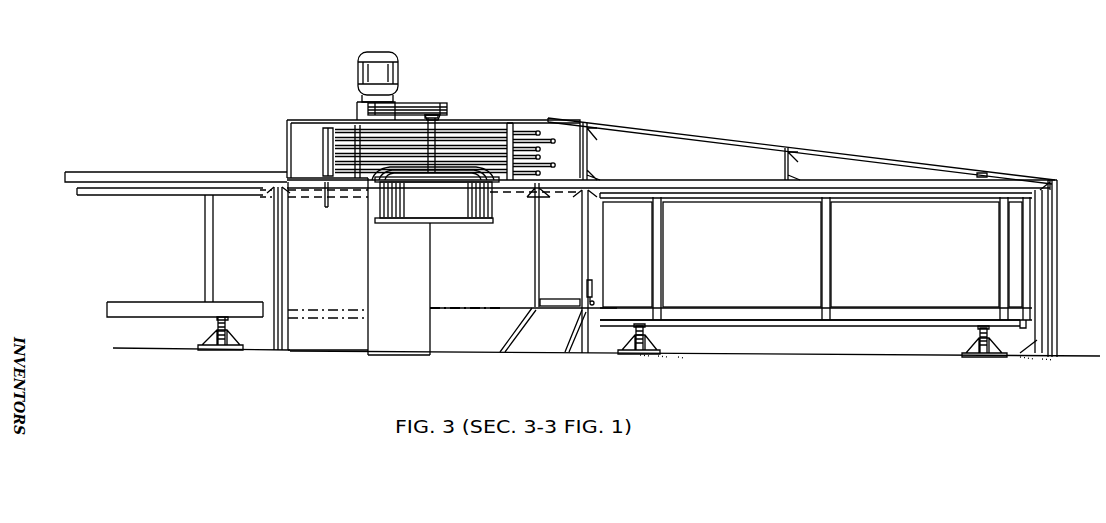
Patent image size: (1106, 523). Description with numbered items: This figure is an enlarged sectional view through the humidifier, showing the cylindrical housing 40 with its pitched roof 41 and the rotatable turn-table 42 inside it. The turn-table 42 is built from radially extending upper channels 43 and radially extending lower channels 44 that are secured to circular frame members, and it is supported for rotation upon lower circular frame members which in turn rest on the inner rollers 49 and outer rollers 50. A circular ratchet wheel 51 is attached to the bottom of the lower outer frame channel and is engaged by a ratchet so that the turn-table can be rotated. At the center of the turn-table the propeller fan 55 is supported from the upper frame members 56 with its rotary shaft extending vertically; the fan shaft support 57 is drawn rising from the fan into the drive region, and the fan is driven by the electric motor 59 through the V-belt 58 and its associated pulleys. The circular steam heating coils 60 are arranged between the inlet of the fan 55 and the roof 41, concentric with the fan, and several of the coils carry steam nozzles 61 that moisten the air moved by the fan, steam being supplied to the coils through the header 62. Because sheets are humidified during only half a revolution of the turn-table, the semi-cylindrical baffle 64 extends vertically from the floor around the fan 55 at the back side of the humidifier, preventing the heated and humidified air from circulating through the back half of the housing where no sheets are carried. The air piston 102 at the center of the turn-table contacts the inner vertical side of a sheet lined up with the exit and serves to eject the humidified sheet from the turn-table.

The cylindrical housing 40 is at (1055, 265).
The pitched roof 41 is at (858, 155).
The turn-table 42 is at (107, 305).
The upper channels 43 is at (752, 203).
The lower channels 44 is at (737, 307).
The inner rollers 49 is at (223, 350).
The outer rollers 50 is at (985, 353).
The circular ratchet wheel 51 is at (1023, 325).
The propeller fan 55 is at (462, 225).
The upper frame members 56 is at (193, 181).
The fan drive shaft support 57 is at (437, 133).
The V-belt 58 is at (412, 104).
The electric motor 59 is at (388, 50).
The circular steam heating coils 60 is at (522, 130).
The steam nozzles 61 is at (552, 145).
The header 62 is at (330, 130).
The semi-cylindrical baffle 64 is at (368, 237).
The air piston 102 is at (543, 303).